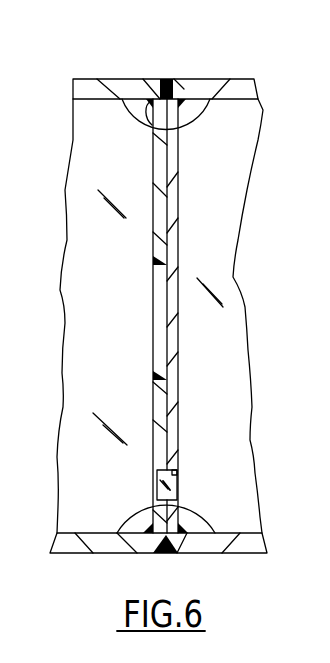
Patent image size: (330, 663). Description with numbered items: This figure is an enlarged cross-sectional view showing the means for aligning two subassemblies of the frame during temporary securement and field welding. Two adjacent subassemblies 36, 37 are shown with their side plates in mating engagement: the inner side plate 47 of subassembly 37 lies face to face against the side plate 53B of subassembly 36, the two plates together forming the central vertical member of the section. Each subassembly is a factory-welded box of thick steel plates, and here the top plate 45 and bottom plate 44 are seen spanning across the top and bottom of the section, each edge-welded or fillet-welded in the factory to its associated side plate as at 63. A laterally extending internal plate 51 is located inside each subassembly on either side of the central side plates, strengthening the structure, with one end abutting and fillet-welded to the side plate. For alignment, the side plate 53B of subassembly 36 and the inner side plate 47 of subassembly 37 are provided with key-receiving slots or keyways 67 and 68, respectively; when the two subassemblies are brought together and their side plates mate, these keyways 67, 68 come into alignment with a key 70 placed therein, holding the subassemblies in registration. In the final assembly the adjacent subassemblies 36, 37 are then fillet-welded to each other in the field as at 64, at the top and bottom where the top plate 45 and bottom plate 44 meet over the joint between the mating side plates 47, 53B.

The subassembly 36 is at (92, 70).
The subassembly 37 is at (250, 68).
The top plate 45 is at (127, 78).
The fillet weld 64 is at (171, 78).
The fillet weld 63 is at (182, 103).
The laterally extending internal plate 51 is at (123, 263).
The inner side plate 47 is at (173, 350).
The side plate 53B is at (152, 394).
The key-receiving slot 67 is at (176, 472).
The key-receiving slot 68 is at (161, 484).
The key 70 is at (173, 488).
The bottom plate 44 is at (103, 553).